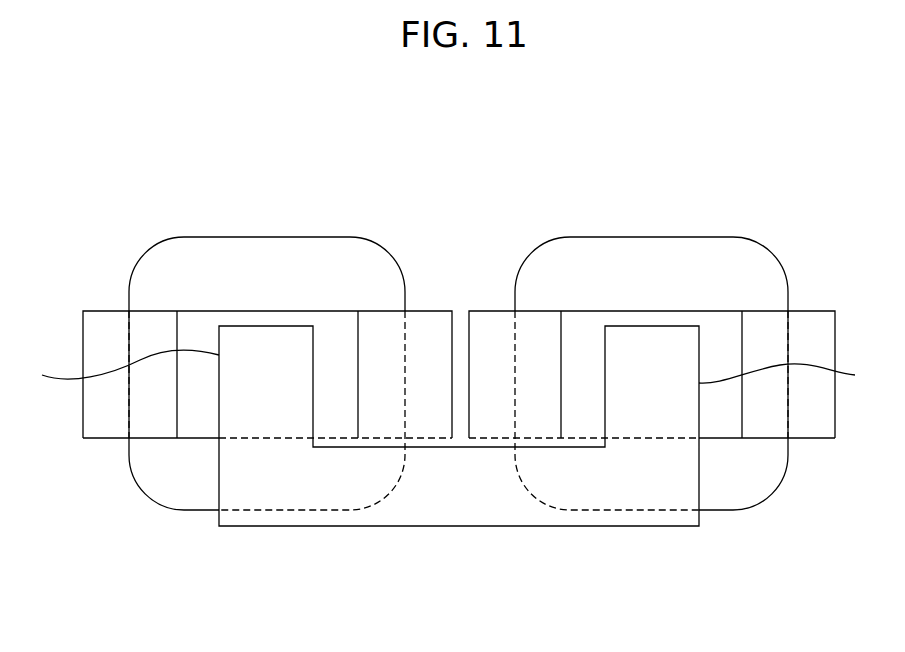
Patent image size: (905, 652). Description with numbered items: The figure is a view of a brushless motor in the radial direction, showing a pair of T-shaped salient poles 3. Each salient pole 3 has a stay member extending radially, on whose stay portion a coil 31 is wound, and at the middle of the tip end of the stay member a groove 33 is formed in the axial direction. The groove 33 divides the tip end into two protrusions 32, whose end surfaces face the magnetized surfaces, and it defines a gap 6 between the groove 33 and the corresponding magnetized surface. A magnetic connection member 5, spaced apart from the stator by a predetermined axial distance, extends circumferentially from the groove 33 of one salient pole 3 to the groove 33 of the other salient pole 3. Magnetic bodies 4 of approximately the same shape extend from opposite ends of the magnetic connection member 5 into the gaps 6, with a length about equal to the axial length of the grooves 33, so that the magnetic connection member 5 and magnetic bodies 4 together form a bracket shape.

The salient pole 3 is at (461, 315).
The coil 31 is at (307, 237).
The protrusion 32 is at (98, 311).
The groove 33 is at (333, 311).
The magnetic body 4 is at (446, 372).
The magnetic connection member 5 is at (460, 526).
The gap 6 is at (194, 422).